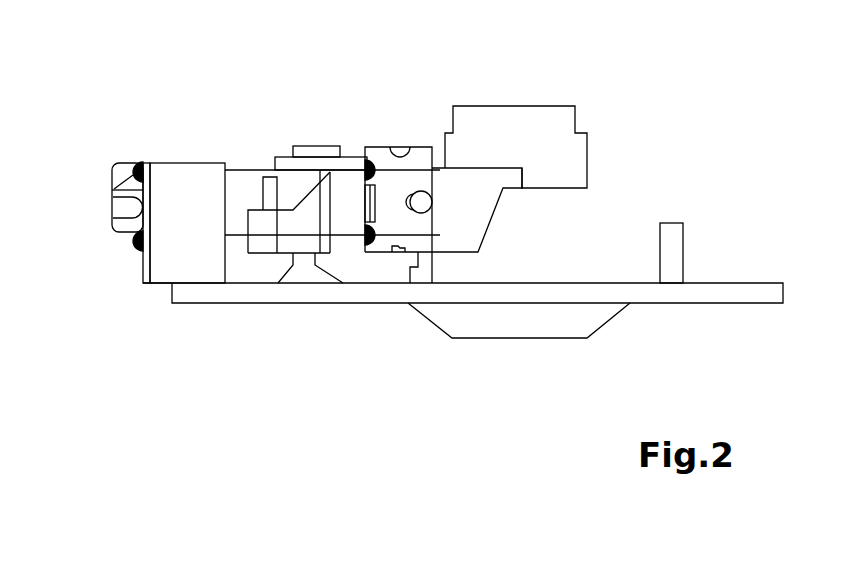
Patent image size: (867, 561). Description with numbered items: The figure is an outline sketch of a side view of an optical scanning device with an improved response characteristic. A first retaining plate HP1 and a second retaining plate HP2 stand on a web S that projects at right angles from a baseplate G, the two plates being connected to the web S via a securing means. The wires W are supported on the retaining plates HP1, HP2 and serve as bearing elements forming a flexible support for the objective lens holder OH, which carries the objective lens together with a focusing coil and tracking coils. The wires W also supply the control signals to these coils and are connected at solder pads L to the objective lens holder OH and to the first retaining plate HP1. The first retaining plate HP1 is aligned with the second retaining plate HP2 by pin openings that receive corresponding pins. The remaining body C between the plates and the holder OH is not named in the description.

The first retaining plate HP1 is at (145, 162).
The second retaining plate HP2 is at (205, 162).
The web S is at (118, 165).
The solder pads L is at (112, 191).
The wires W is at (248, 172).
The objective lens holder OH is at (563, 172).
The baseplate G is at (752, 281).
The carriage body C is at (443, 215).